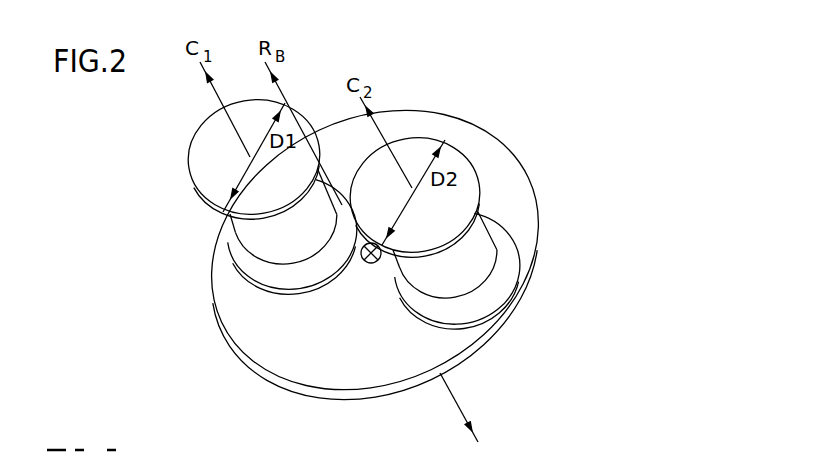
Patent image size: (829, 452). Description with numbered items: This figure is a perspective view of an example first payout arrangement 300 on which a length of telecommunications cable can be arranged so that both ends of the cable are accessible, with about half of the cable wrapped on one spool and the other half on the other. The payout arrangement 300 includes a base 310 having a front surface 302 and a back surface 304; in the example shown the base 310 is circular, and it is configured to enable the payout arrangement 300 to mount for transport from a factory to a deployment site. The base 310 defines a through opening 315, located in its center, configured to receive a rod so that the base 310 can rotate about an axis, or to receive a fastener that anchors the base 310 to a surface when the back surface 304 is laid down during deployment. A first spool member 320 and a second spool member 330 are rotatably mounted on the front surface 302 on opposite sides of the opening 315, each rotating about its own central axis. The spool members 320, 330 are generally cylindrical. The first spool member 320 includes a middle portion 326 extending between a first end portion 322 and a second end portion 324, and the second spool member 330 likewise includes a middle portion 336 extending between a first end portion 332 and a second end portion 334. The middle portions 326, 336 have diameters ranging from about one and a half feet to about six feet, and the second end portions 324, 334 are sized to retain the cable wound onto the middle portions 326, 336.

The first payout arrangement 300 is at (492, 95).
The front surface 302 is at (222, 283).
The back surface 304 is at (525, 314).
The base 310 is at (502, 167).
The through opening 315 is at (372, 264).
The first spool member 320 is at (215, 192).
The first end portion 322 is at (275, 277).
The second end portion 324 is at (248, 123).
The middle portion 326 is at (310, 198).
The second spool member 330 is at (478, 231).
The first end portion 332 is at (507, 252).
The second end portion 334 is at (452, 157).
The middle portion 336 is at (440, 280).